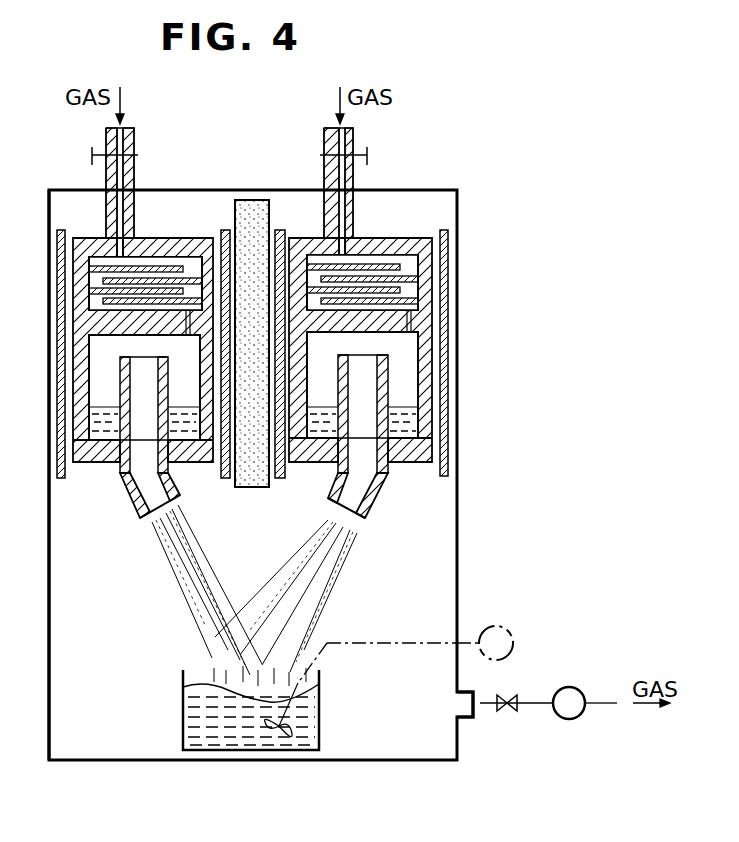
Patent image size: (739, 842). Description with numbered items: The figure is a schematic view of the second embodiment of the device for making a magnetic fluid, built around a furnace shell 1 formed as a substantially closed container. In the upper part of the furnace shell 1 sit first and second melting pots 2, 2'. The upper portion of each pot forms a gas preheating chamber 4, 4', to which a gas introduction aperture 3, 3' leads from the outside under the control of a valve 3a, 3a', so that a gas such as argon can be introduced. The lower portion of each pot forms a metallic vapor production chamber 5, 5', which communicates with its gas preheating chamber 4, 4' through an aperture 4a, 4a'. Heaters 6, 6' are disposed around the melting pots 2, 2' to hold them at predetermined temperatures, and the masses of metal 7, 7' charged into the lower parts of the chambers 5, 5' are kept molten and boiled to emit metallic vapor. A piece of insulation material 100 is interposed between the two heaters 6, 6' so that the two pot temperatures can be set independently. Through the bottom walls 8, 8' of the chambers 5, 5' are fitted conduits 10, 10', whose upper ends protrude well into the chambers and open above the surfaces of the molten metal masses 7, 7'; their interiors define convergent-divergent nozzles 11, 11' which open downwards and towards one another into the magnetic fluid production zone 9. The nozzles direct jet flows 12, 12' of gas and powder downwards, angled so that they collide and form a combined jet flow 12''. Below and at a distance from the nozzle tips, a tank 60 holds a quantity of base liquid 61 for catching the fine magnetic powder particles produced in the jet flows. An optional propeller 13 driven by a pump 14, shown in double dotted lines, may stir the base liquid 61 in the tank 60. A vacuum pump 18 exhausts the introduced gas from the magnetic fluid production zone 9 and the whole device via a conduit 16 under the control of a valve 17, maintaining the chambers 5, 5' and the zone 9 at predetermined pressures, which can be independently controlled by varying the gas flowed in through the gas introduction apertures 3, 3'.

The furnace shell 1 is at (458, 200).
The first melting pot 2 is at (114, 350).
The second melting pot 2' is at (395, 350).
The gas introduction aperture 3 is at (133, 193).
The gas introduction aperture 3' is at (320, 191).
The valve 3a is at (91, 157).
The valve 3a' is at (372, 157).
The gas preheating chamber 4 is at (109, 287).
The gas preheating chamber 4' is at (402, 285).
The aperture 4a is at (181, 336).
The aperture 4a' is at (461, 325).
The metallic vapor production chamber 5 is at (108, 387).
The metallic vapor production chamber 5' is at (402, 385).
The heater 6 is at (123, 343).
The heater 6' is at (384, 343).
The mass of metal 7 is at (108, 426).
The mass of metal 7' is at (402, 422).
The bottom wall 8 is at (143, 468).
The bottom wall 8' is at (360, 465).
The magnetic fluid production zone 9 is at (67, 582).
The conduit 10 is at (130, 415).
The conduit 10' is at (382, 414).
The convergent-divergent nozzle 11 is at (140, 501).
The convergent-divergent nozzle 11' is at (378, 500).
The jet flow 12 is at (202, 590).
The jet flow 12' is at (289, 596).
The combined jet flow 12'' is at (235, 663).
The propeller 13 is at (298, 722).
The pump 14 is at (512, 632).
The conduit 16 is at (483, 700).
The valve 17 is at (507, 696).
The vacuum pump 18 is at (566, 687).
The tank 60 is at (321, 697).
The base liquid 61 is at (200, 712).
The insulation material 100 is at (252, 205).